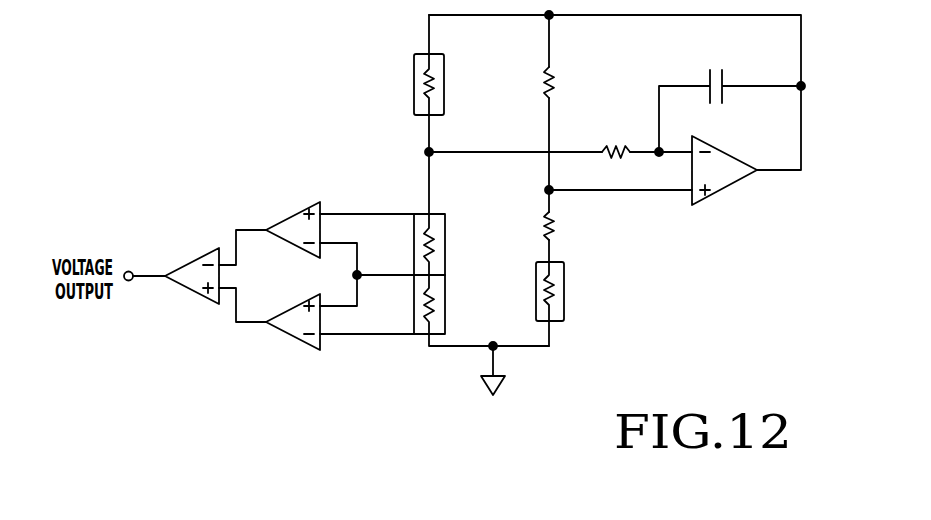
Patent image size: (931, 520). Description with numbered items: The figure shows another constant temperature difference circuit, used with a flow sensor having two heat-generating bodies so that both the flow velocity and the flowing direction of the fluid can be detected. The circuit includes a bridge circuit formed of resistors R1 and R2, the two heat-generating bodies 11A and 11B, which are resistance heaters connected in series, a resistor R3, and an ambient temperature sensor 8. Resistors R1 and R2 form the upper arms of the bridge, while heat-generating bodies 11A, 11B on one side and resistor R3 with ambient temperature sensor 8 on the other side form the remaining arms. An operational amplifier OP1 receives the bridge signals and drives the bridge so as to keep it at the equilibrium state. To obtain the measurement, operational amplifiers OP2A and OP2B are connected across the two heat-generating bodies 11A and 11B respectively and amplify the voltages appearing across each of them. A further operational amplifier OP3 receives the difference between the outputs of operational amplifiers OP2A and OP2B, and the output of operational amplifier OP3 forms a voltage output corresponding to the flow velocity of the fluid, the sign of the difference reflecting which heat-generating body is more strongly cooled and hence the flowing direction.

The resistor R1 is at (440, 84).
The resistor R2 is at (562, 84).
The resistor R3 is at (563, 229).
The ambient temperature sensor 8 is at (564, 290).
The heat-generating body 11A is at (428, 230).
The heat-generating body 11B is at (427, 322).
The operational amplifier OP1 is at (720, 196).
The operational amplifier OP2A is at (290, 212).
The operational amplifier OP2B is at (296, 340).
The operational amplifier OP3 is at (190, 293).